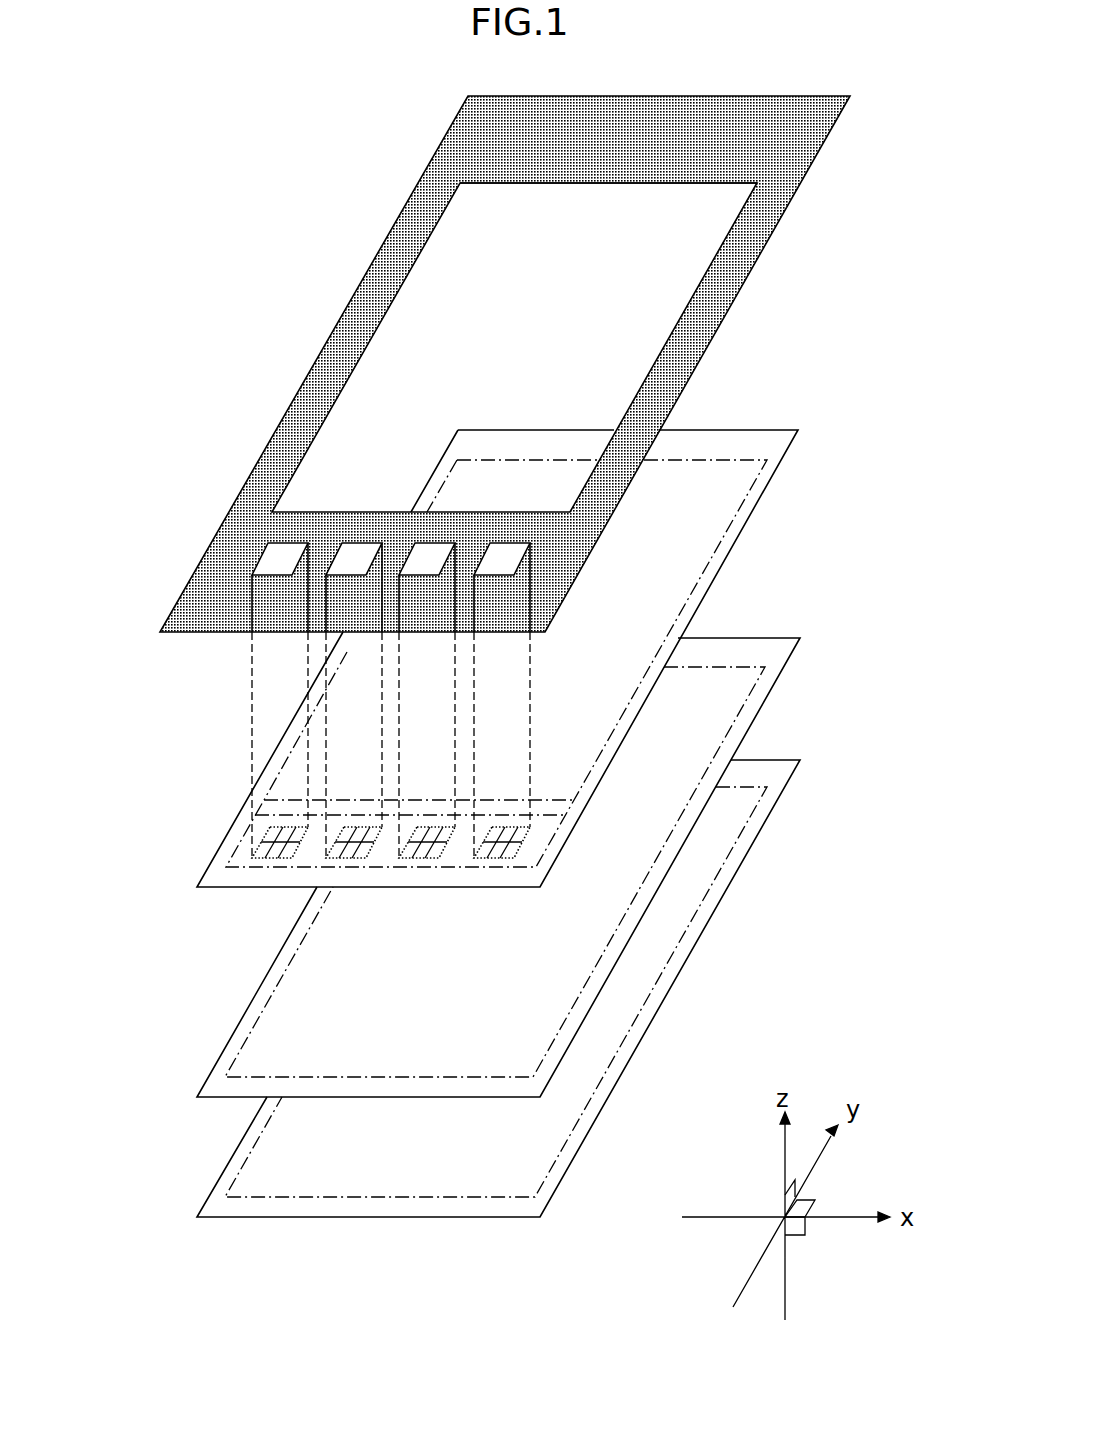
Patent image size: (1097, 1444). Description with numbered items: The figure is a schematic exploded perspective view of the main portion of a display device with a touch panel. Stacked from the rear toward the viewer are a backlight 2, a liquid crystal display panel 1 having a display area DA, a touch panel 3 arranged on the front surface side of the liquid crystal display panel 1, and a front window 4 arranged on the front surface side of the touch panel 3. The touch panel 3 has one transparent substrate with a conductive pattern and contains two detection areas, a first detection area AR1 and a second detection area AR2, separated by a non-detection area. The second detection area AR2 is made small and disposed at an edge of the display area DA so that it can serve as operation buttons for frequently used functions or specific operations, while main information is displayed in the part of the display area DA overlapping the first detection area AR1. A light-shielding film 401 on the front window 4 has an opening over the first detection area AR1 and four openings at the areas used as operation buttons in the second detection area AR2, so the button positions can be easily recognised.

The front window 4 is at (331, 328).
The light-shielding film 401 is at (478, 148).
The touch panel 3 is at (758, 512).
The first detection area AR1 is at (736, 452).
The second detection area AR2 is at (245, 868).
The liquid crystal display panel 1 is at (777, 686).
The backlight 2 is at (760, 836).
The display area DA is at (248, 1078).